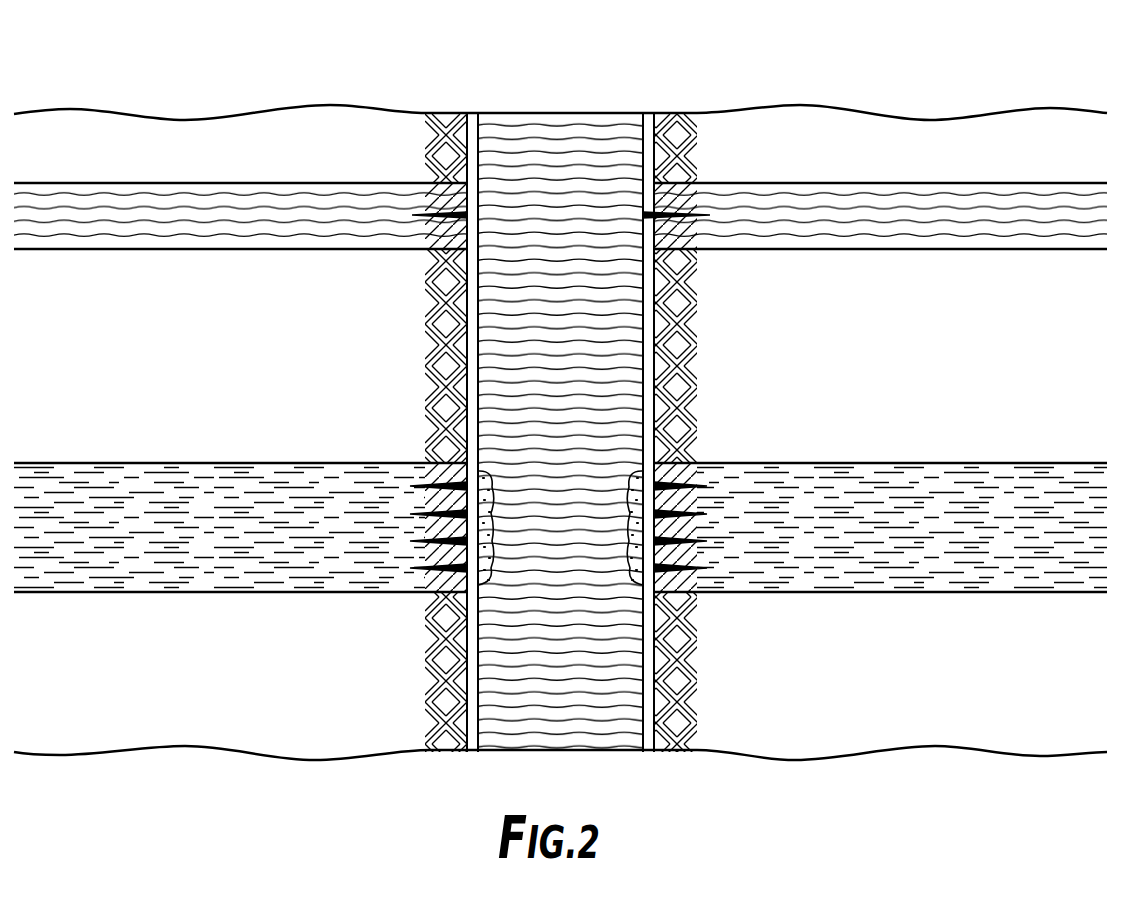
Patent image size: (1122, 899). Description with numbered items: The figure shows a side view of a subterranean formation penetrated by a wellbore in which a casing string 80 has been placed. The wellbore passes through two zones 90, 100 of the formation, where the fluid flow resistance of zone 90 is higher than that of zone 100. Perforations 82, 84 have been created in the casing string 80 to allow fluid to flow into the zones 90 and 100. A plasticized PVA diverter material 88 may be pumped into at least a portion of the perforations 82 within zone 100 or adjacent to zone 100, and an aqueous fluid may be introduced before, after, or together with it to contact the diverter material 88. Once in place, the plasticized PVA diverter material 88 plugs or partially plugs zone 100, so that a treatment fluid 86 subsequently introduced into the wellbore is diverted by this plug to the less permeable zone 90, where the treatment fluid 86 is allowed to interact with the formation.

The casing string 80 is at (662, 146).
The perforations 82 is at (443, 482).
The perforations 84 is at (673, 220).
The treatment fluid 86 is at (540, 153).
The plasticized PVA diverter material 88 is at (634, 480).
The zone 90 is at (231, 226).
The zone 100 is at (899, 550).